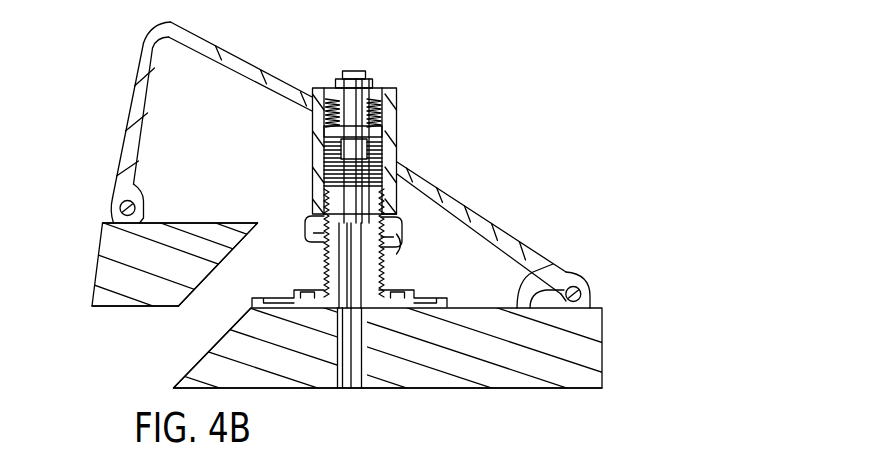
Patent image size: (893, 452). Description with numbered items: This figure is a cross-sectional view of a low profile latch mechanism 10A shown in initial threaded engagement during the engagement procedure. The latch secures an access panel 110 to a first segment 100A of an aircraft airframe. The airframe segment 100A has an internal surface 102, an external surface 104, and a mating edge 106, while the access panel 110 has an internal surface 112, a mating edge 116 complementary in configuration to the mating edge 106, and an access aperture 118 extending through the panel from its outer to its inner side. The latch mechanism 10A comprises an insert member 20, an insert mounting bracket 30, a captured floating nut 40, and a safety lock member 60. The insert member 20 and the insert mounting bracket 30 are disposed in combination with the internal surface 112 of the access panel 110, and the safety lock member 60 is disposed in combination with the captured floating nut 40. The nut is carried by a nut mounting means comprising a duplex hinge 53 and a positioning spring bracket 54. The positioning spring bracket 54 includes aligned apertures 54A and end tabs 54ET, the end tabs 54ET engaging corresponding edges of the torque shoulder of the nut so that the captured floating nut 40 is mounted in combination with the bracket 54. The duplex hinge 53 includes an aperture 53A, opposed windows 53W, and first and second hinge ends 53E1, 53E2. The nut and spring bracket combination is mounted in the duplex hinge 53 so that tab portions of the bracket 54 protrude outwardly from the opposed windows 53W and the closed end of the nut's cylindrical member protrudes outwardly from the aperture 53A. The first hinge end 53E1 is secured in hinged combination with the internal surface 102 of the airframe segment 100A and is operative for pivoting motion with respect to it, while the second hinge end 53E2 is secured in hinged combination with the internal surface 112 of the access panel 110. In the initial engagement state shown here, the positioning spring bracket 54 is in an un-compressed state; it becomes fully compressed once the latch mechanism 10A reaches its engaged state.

The low profile latch mechanism 10A is at (521, 137).
The insert member 20 is at (310, 262).
The insert mounting bracket 30 is at (434, 285).
The captured floating nut 40 is at (401, 114).
The duplex hinge 53 is at (242, 50).
The aperture 53A is at (397, 158).
The first hinge end 53E1 is at (113, 206).
The second hinge end 53E2 is at (590, 286).
The opposed windows 53W is at (401, 235).
The positioning spring bracket 54 is at (302, 189).
The aligned apertures 54A is at (395, 211).
The end tabs 54ET is at (303, 220).
The safety lock member 60 is at (379, 77).
The first airframe segment 100A is at (108, 272).
The internal surface 102 is at (200, 222).
The external surface 104 is at (118, 307).
The mating edge 106 is at (183, 303).
The access panel 110 is at (493, 376).
The internal surface 112 is at (548, 268).
The mating edge 116 is at (206, 347).
The access aperture 118 is at (343, 384).